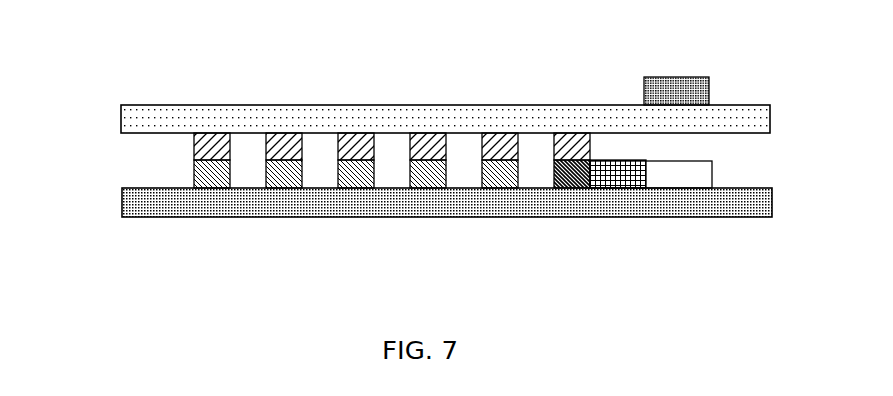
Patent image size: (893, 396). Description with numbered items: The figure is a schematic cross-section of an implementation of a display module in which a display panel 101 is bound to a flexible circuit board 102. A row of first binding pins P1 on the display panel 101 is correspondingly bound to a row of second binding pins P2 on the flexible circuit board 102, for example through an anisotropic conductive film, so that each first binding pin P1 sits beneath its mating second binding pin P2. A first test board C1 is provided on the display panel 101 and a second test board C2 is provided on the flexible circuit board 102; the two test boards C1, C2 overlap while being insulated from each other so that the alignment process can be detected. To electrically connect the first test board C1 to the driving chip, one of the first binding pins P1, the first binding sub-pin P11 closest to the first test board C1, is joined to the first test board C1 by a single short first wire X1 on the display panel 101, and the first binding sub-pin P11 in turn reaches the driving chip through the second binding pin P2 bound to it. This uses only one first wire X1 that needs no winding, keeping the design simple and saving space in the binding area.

The display panel 101 is at (158, 203).
The flexible circuit board 102 is at (157, 118).
The first binding pins P1 is at (275, 170).
The second binding pins P2 is at (282, 142).
The first binding sub-pin P11 is at (568, 177).
The first wire X1 is at (620, 180).
The first test board C1 is at (693, 177).
The second test board C2 is at (662, 92).